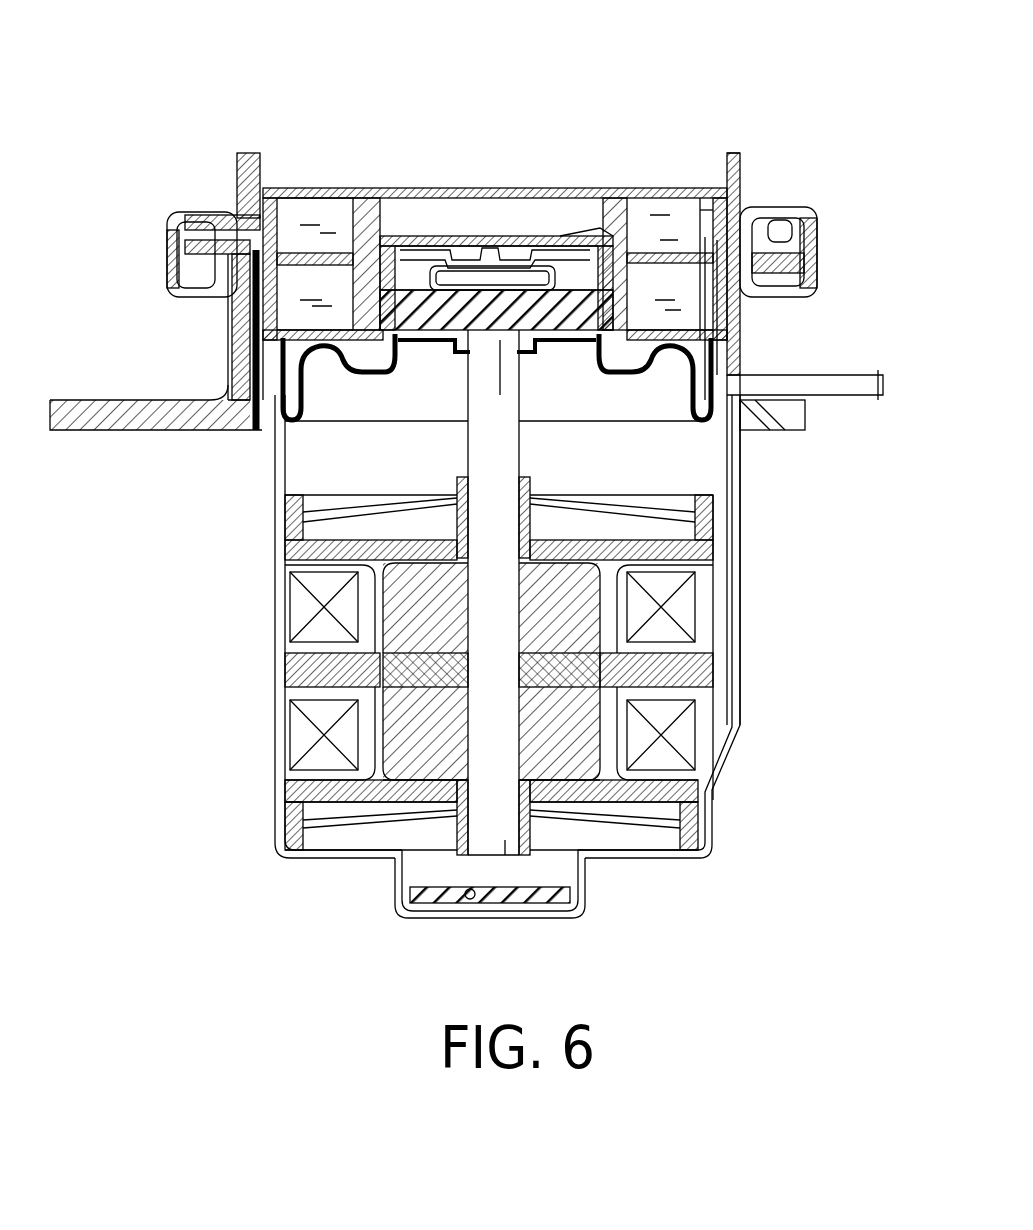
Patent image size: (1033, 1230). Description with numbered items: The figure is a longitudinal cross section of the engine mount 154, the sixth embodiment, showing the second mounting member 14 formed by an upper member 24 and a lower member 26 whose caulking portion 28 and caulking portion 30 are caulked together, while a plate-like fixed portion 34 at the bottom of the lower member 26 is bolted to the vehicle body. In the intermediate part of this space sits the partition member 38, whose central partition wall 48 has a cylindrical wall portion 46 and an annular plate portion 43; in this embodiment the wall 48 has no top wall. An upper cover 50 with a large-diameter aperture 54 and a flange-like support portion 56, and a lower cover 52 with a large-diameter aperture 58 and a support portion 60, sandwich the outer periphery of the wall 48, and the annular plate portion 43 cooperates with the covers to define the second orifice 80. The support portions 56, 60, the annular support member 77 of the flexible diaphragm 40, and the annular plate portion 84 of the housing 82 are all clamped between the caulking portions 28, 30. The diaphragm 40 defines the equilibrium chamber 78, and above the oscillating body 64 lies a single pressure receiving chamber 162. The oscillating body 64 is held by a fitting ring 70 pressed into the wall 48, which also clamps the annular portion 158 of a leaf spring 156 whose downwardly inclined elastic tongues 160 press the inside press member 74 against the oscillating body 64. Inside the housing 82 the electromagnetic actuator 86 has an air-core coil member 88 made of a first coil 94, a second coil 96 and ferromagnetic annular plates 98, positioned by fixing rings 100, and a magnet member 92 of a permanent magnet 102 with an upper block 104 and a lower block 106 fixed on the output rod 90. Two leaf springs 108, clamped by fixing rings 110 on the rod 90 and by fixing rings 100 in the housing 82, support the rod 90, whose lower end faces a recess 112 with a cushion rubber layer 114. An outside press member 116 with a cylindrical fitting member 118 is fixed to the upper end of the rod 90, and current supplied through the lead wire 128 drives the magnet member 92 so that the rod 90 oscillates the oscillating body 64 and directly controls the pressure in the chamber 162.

The second mounting member 14 is at (230, 165).
The upper member 24 is at (742, 190).
The lower member 26 is at (240, 390).
The caulking portion 28 is at (170, 255).
The caulking portion 30 is at (790, 275).
The fixed portion 34 is at (90, 430).
The partition member 38 is at (643, 188).
The flexible diaphragm 40 is at (728, 437).
The annular plate portion 43 is at (300, 250).
The cylindrical wall portion 46 is at (677, 220).
The central partition wall 48 is at (370, 188).
The upper cover 50 is at (325, 195).
The lower cover 52 is at (690, 365).
The large-diameter aperture 54 is at (595, 200).
The support portion 56 is at (240, 215).
The large-diameter aperture 58 is at (690, 340).
The support portion 60 is at (755, 235).
The oscillating body 64 is at (552, 235).
The fitting ring 70 is at (700, 300).
The inside press member 74 is at (525, 240).
The annular support member 77 is at (185, 240).
The equilibrium chamber 78 is at (256, 420).
The second orifice 80 is at (300, 320).
The housing 82 is at (268, 765).
The annular plate portion 84 is at (200, 270).
The electromagnetic actuator 86 is at (755, 610).
The air-core coil member 88 is at (655, 815).
The output rod 90 is at (505, 845).
The magnet member 92 is at (412, 880).
The first coil 94 is at (310, 600).
The second coil 96 is at (310, 730).
The annular plates 98 is at (670, 540).
The fixing rings 100 is at (700, 520).
The permanent magnet 102 is at (580, 695).
The upper block 104 is at (555, 575).
The lower block 106 is at (568, 775).
The leaf spring 108 is at (345, 508).
The fixing rings 110 is at (460, 515).
The recess 112 is at (472, 897).
The cushion rubber layer 114 is at (528, 903).
The outside press member 116 is at (450, 358).
The cylindrical fitting member 118 is at (460, 380).
The lead wire 128 is at (840, 397).
The engine mount 154 is at (700, 68).
The leaf spring 156 is at (425, 232).
The annular portion 158 is at (713, 215).
The elastic tongues 160 is at (462, 232).
The pressure receiving chamber 162 is at (438, 160).